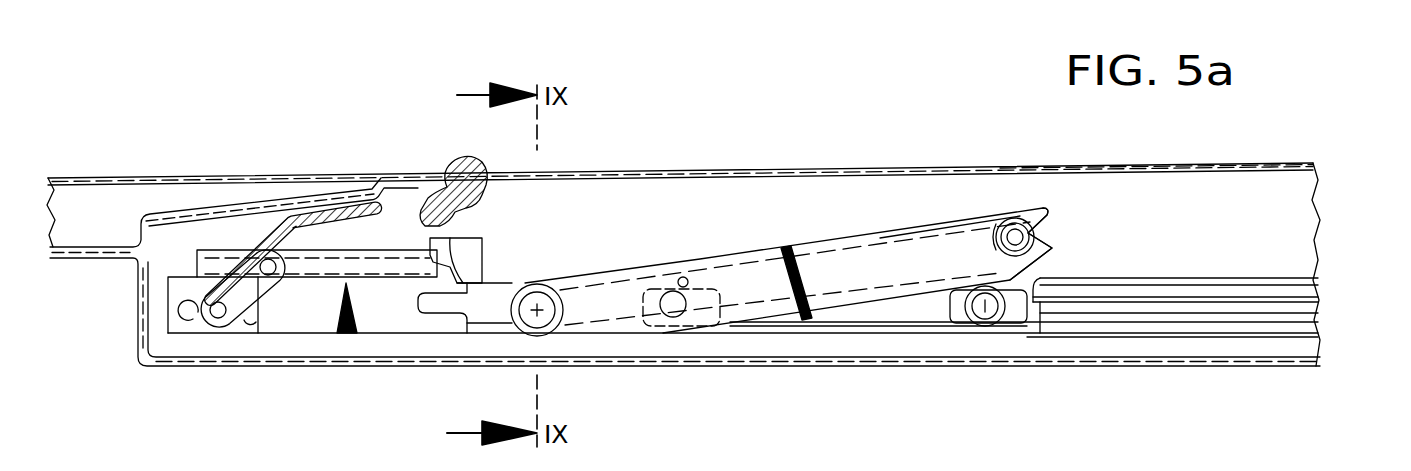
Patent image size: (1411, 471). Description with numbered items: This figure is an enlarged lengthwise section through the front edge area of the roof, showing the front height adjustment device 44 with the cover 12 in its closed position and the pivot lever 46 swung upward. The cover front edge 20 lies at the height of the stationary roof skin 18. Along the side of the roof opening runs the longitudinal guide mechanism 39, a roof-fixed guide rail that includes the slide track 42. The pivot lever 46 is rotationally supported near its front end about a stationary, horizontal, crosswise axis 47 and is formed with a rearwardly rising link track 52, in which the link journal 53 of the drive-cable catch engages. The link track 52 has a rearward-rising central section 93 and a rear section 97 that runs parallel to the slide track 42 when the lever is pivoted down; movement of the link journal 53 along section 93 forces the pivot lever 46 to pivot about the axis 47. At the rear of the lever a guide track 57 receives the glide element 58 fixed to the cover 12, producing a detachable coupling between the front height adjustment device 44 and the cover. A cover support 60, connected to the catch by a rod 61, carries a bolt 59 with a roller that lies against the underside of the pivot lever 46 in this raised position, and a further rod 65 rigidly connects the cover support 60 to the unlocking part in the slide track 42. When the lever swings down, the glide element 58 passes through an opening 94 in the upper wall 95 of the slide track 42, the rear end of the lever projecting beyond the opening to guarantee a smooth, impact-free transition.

The cover 12 is at (1140, 166).
The stationary roof skin 18 is at (214, 178).
The cover front edge 20 is at (489, 173).
The longitudinal guide mechanism 39 is at (1278, 278).
The slide track 42 is at (1255, 324).
The front height adjustment device 44 is at (780, 372).
The pivot lever 46 is at (807, 247).
The axis 47 is at (541, 318).
The link track 52 is at (837, 268).
The link journal 53 is at (677, 312).
The guide track 57 is at (1052, 235).
The glide element 58 is at (1017, 220).
The bolt 59 is at (985, 310).
The cover support 60 is at (1015, 312).
The rod 61 is at (910, 310).
The rod 65 is at (1178, 315).
The rearward-rising section of link track 93 is at (857, 258).
The opening 94 is at (1040, 285).
The upper wall 95 is at (1205, 278).
The rear section of link track 97 is at (955, 228).